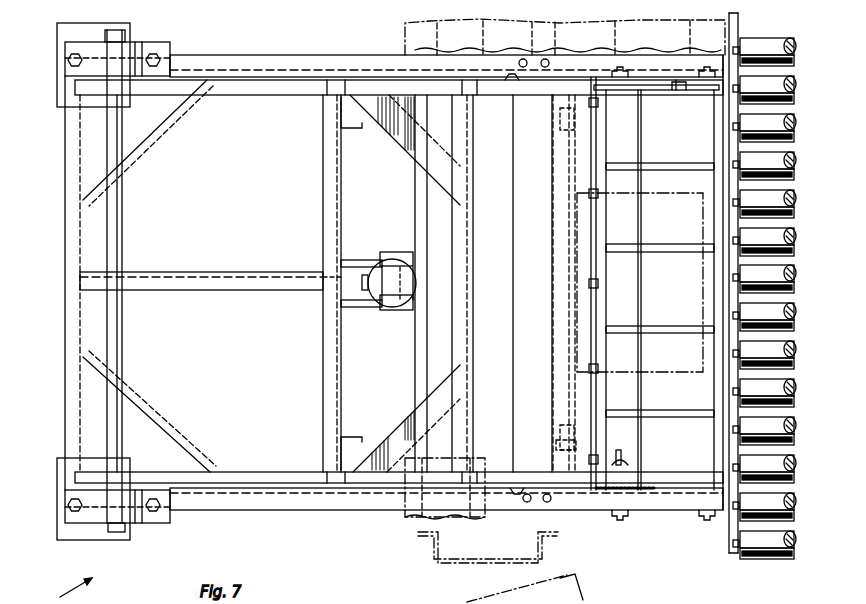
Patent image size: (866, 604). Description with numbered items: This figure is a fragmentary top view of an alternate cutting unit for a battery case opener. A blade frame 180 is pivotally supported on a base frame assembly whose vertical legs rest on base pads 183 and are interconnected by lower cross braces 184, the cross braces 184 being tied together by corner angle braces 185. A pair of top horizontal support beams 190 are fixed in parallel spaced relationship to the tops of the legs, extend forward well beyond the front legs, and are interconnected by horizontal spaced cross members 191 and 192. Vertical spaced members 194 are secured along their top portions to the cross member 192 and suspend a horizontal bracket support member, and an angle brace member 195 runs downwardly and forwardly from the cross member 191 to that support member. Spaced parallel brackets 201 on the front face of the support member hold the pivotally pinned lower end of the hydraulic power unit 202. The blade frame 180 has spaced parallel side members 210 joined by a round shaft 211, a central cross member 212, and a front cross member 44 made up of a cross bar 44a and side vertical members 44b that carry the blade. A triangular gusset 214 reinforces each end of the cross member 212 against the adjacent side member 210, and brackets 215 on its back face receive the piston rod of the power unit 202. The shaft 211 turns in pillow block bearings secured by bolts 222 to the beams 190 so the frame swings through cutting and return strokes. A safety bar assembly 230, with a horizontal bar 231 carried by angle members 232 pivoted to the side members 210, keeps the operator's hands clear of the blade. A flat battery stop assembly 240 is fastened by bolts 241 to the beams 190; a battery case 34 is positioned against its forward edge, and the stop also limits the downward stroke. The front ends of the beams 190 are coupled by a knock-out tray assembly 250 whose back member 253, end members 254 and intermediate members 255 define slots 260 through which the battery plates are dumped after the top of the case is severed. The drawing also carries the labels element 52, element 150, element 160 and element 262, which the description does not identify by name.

The battery case 34 is at (682, 370).
The front cross member 44 is at (556, 228).
The cross bar 44a is at (578, 283).
The side vertical members 44b is at (575, 438).
The gate shaft 52 is at (597, 283).
The roller conveyor 150 is at (786, 552).
The mounting channel 160 is at (425, 538).
The blade frame 180 is at (376, 292).
The base pads 183 is at (128, 34).
The lower cross braces 184 is at (464, 229).
The corner angle braces 185 is at (142, 133).
The top horizontal support beams 190 is at (280, 44).
The cross member 191 is at (65, 192).
The cross member 192 is at (323, 243).
The vertical spaced members 194 is at (349, 132).
The angle brace member 195 is at (170, 288).
The brackets 201 is at (356, 262).
The hydraulic power unit 202 is at (365, 310).
The side members 210 is at (258, 93).
The round shaft 211 is at (122, 314).
The central cross member 212 is at (415, 170).
The triangular gusset 214 is at (388, 124).
The brackets 215 is at (406, 252).
The bolts 222 is at (155, 518).
The safety bar assembly 230 is at (640, 436).
The horizontal bar 231 is at (626, 460).
The angle members 232 is at (607, 492).
The battery stop assembly 240 is at (513, 368).
The bolts 241 is at (520, 500).
The knock-out tray assembly 250 is at (595, 317).
The back member 253 is at (608, 156).
The end members 254 is at (676, 90).
The intermediate members 255 is at (652, 165).
The slots 260 is at (664, 96).
The frame member 262 is at (714, 141).